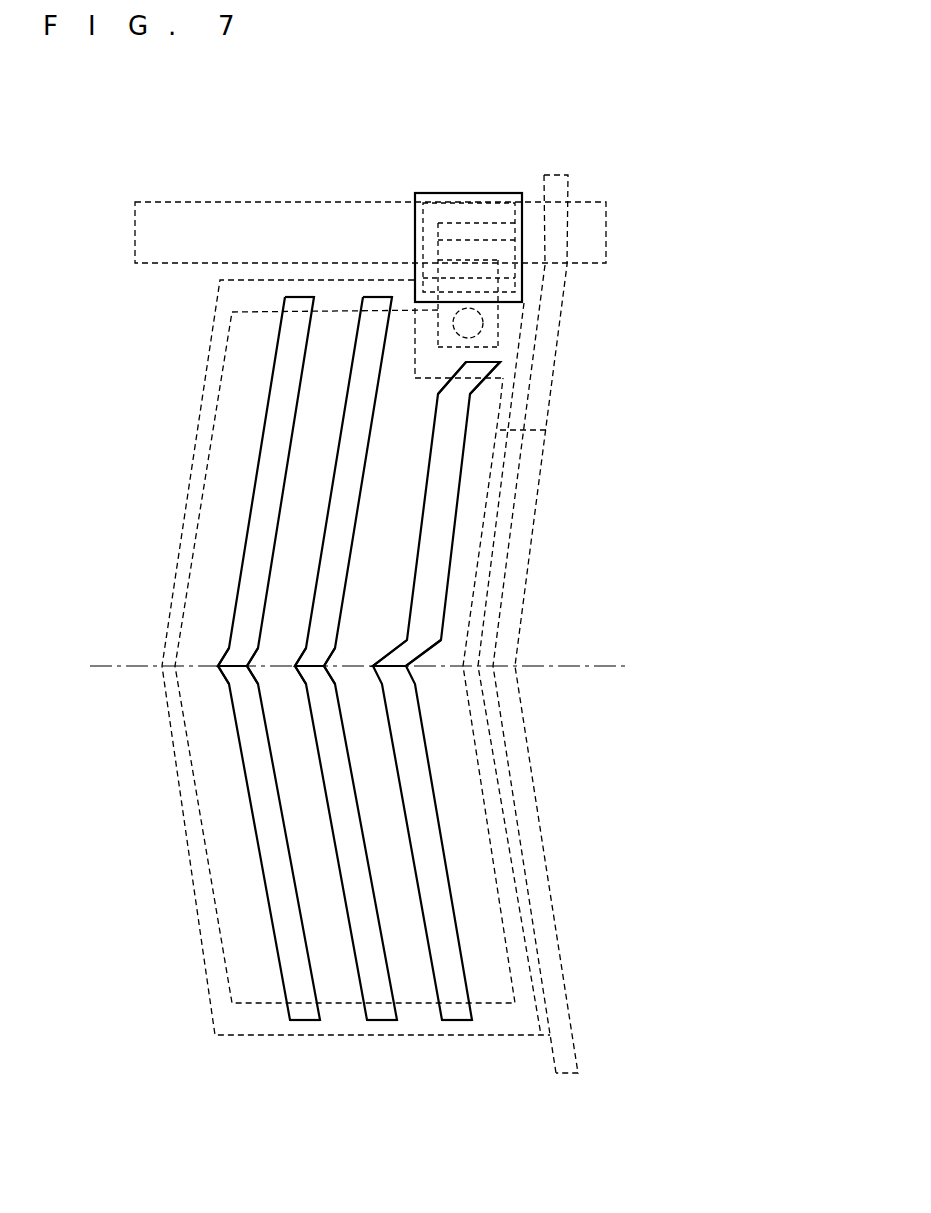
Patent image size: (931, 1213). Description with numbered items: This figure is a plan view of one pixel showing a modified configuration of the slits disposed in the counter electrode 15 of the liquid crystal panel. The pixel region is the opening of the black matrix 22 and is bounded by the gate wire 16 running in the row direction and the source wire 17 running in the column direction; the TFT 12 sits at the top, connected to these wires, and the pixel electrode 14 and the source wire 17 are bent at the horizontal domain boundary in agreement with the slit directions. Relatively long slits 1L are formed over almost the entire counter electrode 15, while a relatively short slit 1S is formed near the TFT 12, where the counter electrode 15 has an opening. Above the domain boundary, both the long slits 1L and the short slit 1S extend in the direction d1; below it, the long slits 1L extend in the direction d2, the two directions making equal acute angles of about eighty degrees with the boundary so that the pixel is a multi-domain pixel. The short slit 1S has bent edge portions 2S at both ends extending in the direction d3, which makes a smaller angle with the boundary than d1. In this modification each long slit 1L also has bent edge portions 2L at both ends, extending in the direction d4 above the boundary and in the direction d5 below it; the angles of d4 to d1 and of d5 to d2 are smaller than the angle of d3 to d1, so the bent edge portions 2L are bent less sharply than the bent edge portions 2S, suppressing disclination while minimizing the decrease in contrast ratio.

The gate wire 16 is at (263, 205).
The TFT 12 is at (432, 203).
The pixel electrode 14 is at (523, 897).
The counter electrode 15 is at (487, 945).
The source wire 17 is at (530, 552).
The black matrix 22 is at (548, 430).
The long slit 1L is at (275, 378).
The short slit 1S is at (445, 483).
The bent edge portion 2S is at (468, 378).
The bent edge portion 2L is at (302, 300).
The direction d1 is at (244, 428).
The direction d2 is at (230, 795).
The direction d3 is at (466, 345).
The direction d4 is at (282, 268).
The direction d5 is at (207, 673).